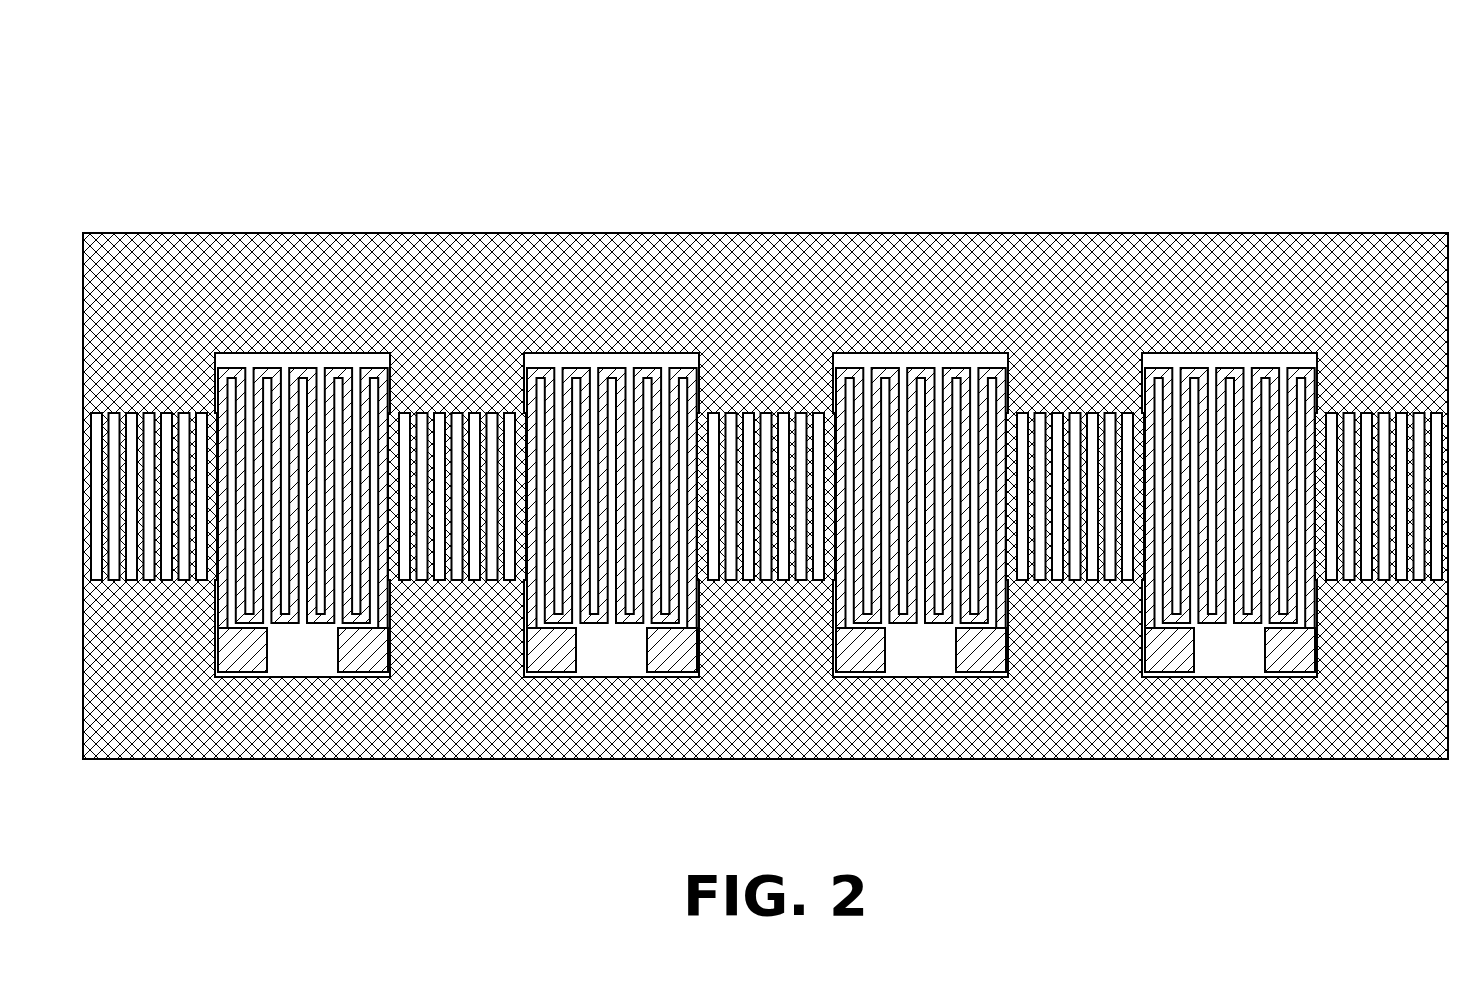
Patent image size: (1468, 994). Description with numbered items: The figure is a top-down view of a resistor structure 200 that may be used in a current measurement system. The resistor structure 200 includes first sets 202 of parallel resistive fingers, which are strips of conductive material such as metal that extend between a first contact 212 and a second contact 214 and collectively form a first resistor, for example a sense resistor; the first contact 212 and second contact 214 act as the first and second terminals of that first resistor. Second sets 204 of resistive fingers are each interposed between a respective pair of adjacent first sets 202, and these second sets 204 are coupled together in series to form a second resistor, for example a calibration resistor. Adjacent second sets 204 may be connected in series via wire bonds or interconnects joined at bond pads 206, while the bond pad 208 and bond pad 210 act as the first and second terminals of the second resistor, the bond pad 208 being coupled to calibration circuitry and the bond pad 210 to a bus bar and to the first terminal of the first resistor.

The resistor structure 200 is at (1326, 65).
The first sets of parallel resistive fingers 202 is at (151, 373).
The second sets of resistive fingers 204 is at (297, 351).
The bond pads 206 is at (338, 667).
The bond pad 208 is at (267, 647).
The bond pad 210 is at (1265, 667).
The first contact 212 is at (722, 753).
The second contact 214 is at (728, 246).